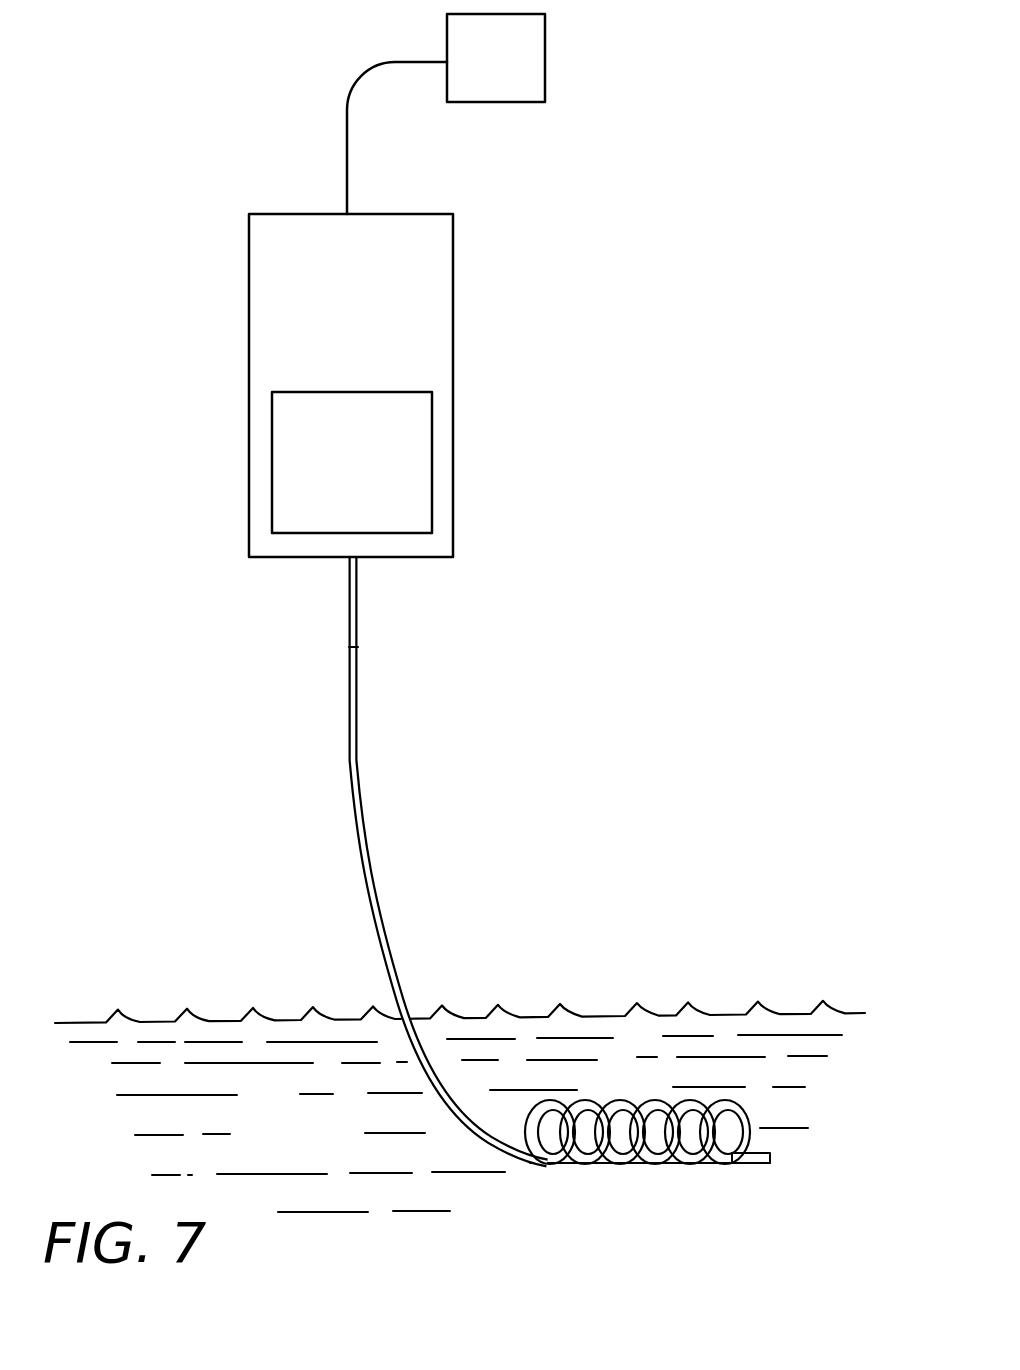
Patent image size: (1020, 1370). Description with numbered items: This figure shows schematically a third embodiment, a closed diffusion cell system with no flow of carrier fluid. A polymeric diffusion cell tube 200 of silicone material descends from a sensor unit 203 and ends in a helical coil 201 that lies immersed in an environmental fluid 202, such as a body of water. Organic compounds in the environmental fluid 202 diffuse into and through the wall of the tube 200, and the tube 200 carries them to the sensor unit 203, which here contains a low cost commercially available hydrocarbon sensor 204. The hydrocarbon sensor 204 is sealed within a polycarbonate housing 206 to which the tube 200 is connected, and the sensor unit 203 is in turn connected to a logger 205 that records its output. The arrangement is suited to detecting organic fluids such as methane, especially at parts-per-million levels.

The polymeric diffusion cell tube 200 is at (392, 937).
The helical coil 201 is at (622, 1100).
The environmental fluid 202 is at (330, 1132).
The sensor unit 203 is at (381, 385).
The hydrocarbon sensor 204 is at (432, 443).
The logger 205 is at (548, 80).
The polycarbonate housing 206 is at (453, 272).